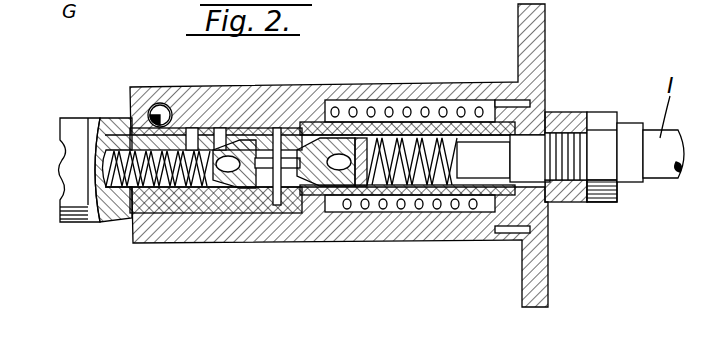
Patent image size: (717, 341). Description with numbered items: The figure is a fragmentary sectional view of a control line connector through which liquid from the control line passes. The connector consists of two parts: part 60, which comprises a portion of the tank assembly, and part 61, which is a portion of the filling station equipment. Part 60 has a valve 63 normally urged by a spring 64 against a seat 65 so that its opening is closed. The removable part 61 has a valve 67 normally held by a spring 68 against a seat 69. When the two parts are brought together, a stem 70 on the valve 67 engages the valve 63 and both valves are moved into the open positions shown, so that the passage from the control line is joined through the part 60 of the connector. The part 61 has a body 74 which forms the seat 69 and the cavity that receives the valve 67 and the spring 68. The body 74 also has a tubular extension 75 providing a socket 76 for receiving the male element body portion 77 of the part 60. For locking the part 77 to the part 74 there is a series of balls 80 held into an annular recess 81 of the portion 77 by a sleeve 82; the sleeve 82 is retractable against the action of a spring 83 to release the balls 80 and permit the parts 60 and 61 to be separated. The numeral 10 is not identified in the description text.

The valve assembly 10 is at (90, 111).
The part 60 is at (104, 132).
The part 61 is at (354, 83).
The valve 63 is at (234, 198).
The spring 64 is at (186, 200).
The seat 65 is at (263, 200).
The valve 67 is at (333, 180).
The spring 68 is at (403, 190).
The seat 69 is at (300, 187).
The stem 70 is at (306, 125).
The body 74 is at (254, 118).
The tubular extension 75 is at (220, 120).
The socket 76 is at (226, 198).
The male element body portion 77 is at (193, 118).
The balls 80 is at (153, 106).
The annular recess 81 is at (141, 212).
The sleeve 82 is at (392, 107).
The spring 83 is at (440, 110).